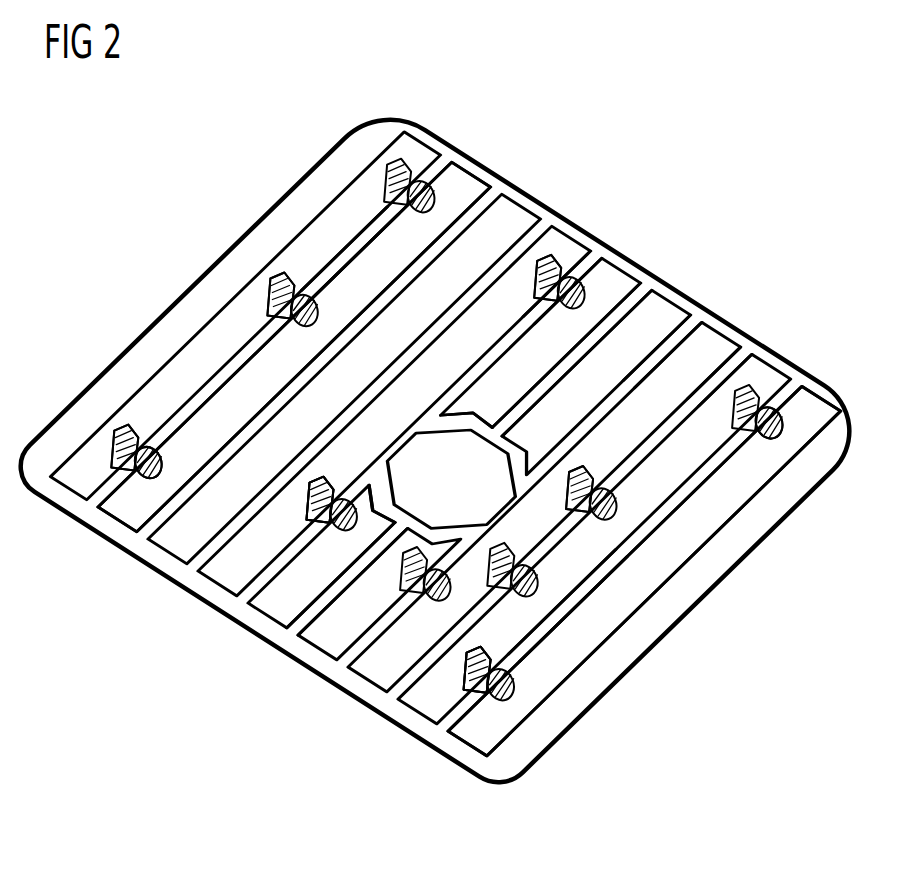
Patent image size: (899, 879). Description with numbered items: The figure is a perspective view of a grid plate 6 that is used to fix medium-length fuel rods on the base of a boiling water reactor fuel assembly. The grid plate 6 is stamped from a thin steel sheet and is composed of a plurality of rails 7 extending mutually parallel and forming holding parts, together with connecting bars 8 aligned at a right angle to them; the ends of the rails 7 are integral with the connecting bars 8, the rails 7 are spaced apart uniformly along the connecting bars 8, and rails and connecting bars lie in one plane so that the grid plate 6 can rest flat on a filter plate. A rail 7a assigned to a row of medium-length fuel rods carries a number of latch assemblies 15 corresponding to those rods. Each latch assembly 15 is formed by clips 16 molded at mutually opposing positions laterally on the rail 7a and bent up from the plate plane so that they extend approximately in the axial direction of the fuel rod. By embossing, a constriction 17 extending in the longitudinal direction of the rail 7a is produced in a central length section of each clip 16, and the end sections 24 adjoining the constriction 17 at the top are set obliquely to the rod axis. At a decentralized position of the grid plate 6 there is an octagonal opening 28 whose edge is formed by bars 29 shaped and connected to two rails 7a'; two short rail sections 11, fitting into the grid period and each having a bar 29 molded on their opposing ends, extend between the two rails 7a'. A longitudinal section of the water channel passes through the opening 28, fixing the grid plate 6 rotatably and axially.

The grid plate 6 is at (580, 186).
The rail 7 is at (445, 230).
The rail 7a is at (491, 401).
The rail 7a' is at (659, 272).
The connecting bar 8 is at (675, 292).
The short rail section 11 is at (620, 308).
The latch assembly 15 is at (405, 150).
The clip 16 is at (113, 462).
The constriction 17 is at (131, 440).
The end section 24 is at (538, 270).
The opening 28 is at (462, 495).
The bar 29 is at (517, 443).